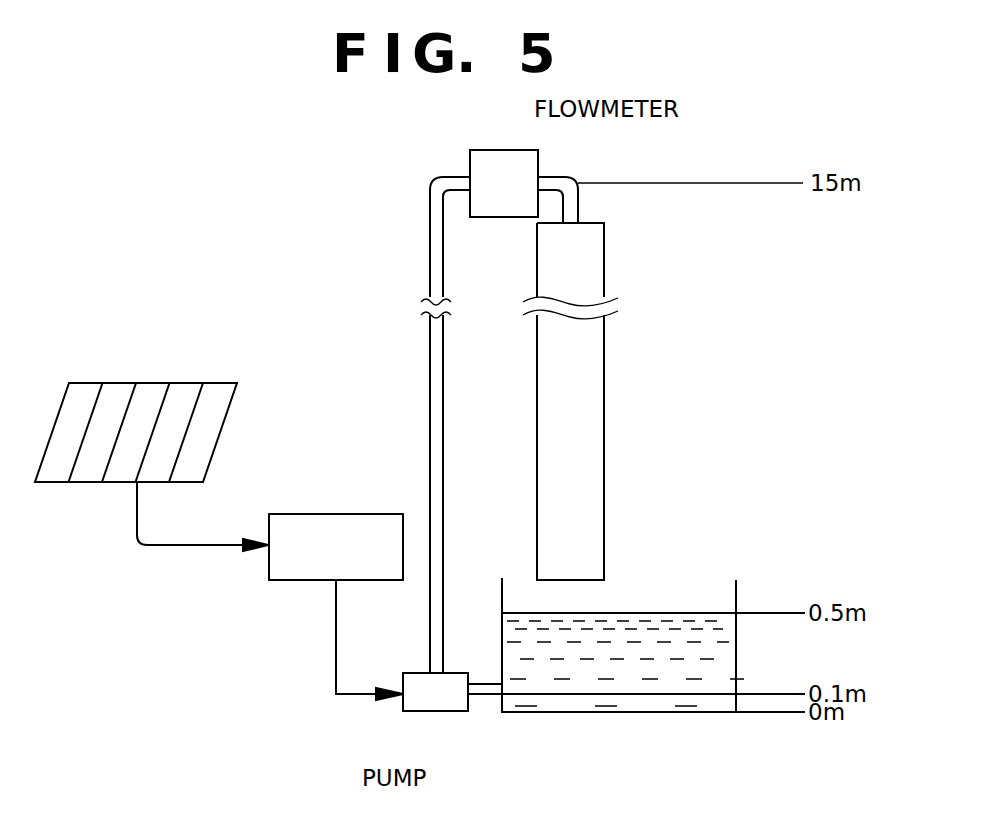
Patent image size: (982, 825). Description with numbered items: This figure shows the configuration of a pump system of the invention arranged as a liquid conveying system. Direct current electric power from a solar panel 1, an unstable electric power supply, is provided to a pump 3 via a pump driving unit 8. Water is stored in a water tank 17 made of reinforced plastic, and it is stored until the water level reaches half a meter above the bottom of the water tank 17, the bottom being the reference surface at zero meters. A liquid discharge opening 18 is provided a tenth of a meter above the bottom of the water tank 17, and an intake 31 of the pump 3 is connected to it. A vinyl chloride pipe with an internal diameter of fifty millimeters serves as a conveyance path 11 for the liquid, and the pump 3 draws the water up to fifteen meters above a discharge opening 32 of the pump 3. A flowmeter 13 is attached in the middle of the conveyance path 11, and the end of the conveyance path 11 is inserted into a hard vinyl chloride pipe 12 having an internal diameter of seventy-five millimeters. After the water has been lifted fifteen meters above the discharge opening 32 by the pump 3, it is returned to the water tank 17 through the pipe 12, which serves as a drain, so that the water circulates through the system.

The solar panel 1 is at (148, 385).
The pump driving unit 8 is at (338, 527).
The pump 3 is at (426, 704).
The intake 31 is at (470, 696).
The discharge opening 32 is at (424, 670).
The conveyance path 11 is at (430, 377).
The hard vinyl chloride pipe 12 is at (590, 400).
The flowmeter 13 is at (506, 160).
The water tank 17 is at (670, 628).
The liquid discharge opening 18 is at (503, 705).